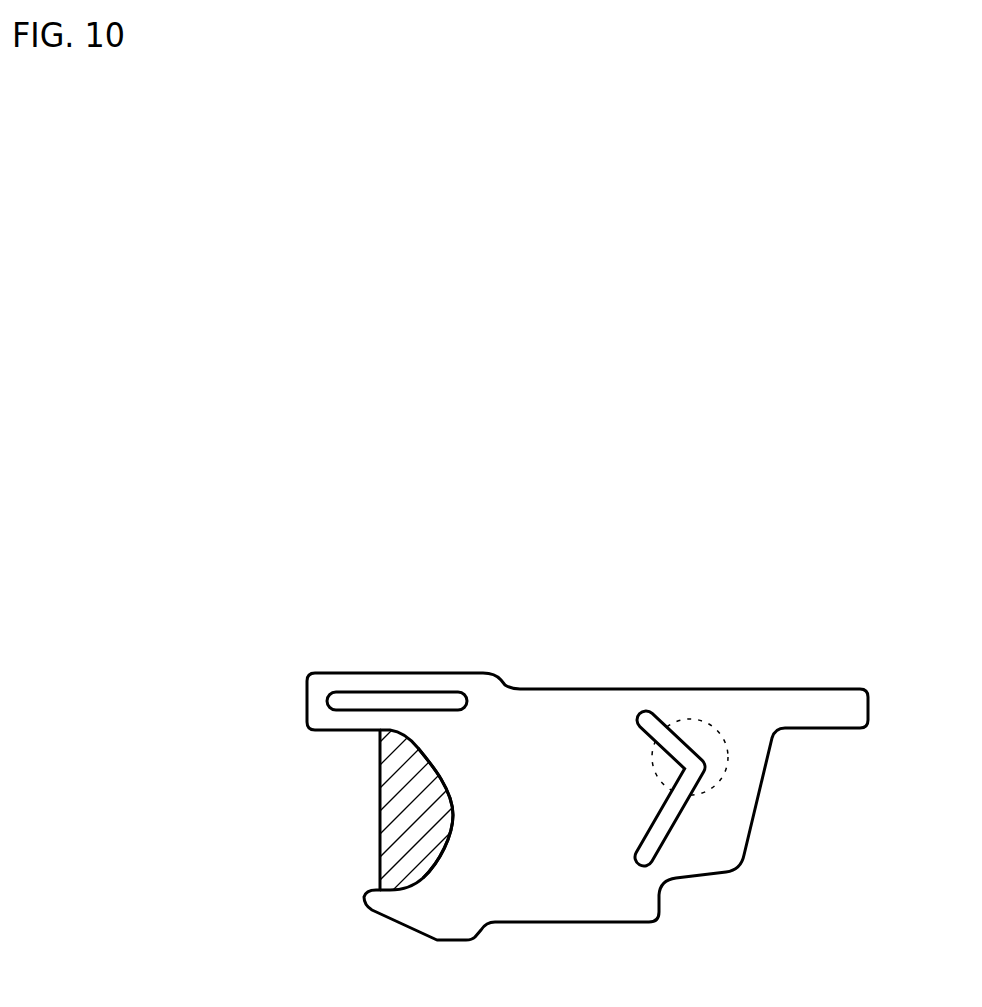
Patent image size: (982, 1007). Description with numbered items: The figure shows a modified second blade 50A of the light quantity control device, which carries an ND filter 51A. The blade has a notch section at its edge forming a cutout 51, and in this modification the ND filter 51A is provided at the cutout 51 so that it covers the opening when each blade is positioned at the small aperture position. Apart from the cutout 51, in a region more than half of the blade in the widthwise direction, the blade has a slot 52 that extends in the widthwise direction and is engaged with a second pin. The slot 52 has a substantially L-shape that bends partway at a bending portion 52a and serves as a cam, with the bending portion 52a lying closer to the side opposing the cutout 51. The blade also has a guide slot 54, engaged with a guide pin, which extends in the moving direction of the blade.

The second blade 50A is at (215, 710).
The cutout 51 is at (420, 872).
The ND filter 51A is at (398, 793).
The slot 52 is at (663, 832).
The bending portion 52a is at (720, 784).
The guide slot 54 is at (423, 693).